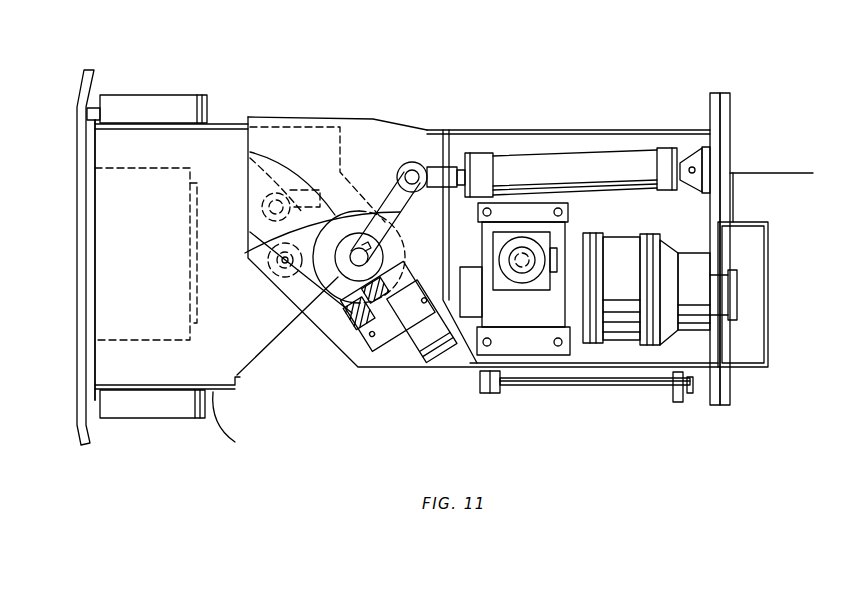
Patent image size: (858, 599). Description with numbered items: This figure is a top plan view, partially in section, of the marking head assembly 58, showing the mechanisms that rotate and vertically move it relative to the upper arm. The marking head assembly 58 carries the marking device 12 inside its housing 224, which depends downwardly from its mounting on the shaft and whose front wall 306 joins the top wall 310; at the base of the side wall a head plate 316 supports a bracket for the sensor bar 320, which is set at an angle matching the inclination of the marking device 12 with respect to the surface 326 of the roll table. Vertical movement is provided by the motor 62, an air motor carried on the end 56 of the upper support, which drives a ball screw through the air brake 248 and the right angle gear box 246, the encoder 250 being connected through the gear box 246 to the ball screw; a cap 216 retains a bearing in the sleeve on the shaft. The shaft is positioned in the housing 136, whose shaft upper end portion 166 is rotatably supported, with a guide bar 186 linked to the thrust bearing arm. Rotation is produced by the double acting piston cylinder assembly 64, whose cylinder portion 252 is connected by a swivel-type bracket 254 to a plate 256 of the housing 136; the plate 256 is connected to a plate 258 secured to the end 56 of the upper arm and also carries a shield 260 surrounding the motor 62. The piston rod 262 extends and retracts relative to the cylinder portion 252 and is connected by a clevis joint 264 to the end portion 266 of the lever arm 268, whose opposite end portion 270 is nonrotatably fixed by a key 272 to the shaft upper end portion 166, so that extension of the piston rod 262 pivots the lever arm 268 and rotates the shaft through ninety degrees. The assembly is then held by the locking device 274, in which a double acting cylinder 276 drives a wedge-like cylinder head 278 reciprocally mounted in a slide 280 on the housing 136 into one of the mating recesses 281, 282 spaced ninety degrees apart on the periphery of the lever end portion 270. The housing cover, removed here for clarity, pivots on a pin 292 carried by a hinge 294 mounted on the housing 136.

The marking device 12 is at (105, 192).
The end of the upper support 56 is at (813, 173).
The marking head assembly 58 is at (175, 437).
The motor 62 is at (732, 278).
The double acting piston cylinder assembly 64 is at (571, 138).
The housing 136 is at (486, 128).
The shaft upper end portion 166 is at (292, 233).
The guide bar 186 is at (268, 256).
The cap 216 is at (338, 305).
The marking head assembly housing 224 is at (238, 425).
The right angle gear box 246 is at (492, 323).
The air brake 248 is at (630, 246).
The encoder 250 is at (538, 244).
The cylinder portion 252 is at (607, 150).
The swivel-type bracket 254 is at (697, 158).
The plate 256 is at (710, 103).
The plate 258 is at (730, 108).
The shield 260 is at (770, 306).
The piston rod 262 is at (248, 152).
The clevis joint 264 is at (428, 168).
The lever arm end portion 266 is at (387, 188).
The lever arm 268 is at (357, 250).
The lever arm opposite end portion 270 is at (412, 241).
The key 272 is at (366, 250).
The locking device 274 is at (346, 330).
The double acting cylinder 276 is at (407, 342).
The cylinder head 278 is at (443, 305).
The slide 280 is at (348, 300).
The recess 281 is at (292, 278).
The recess 282 is at (360, 288).
The pin 292 is at (570, 386).
The hinge 294 is at (677, 398).
The front wall 306 is at (92, 228).
The top wall 310 is at (242, 132).
The head plate 316 is at (135, 415).
The sensor bar 320 is at (79, 430).
The surface of the roll table 326 is at (52, 598).